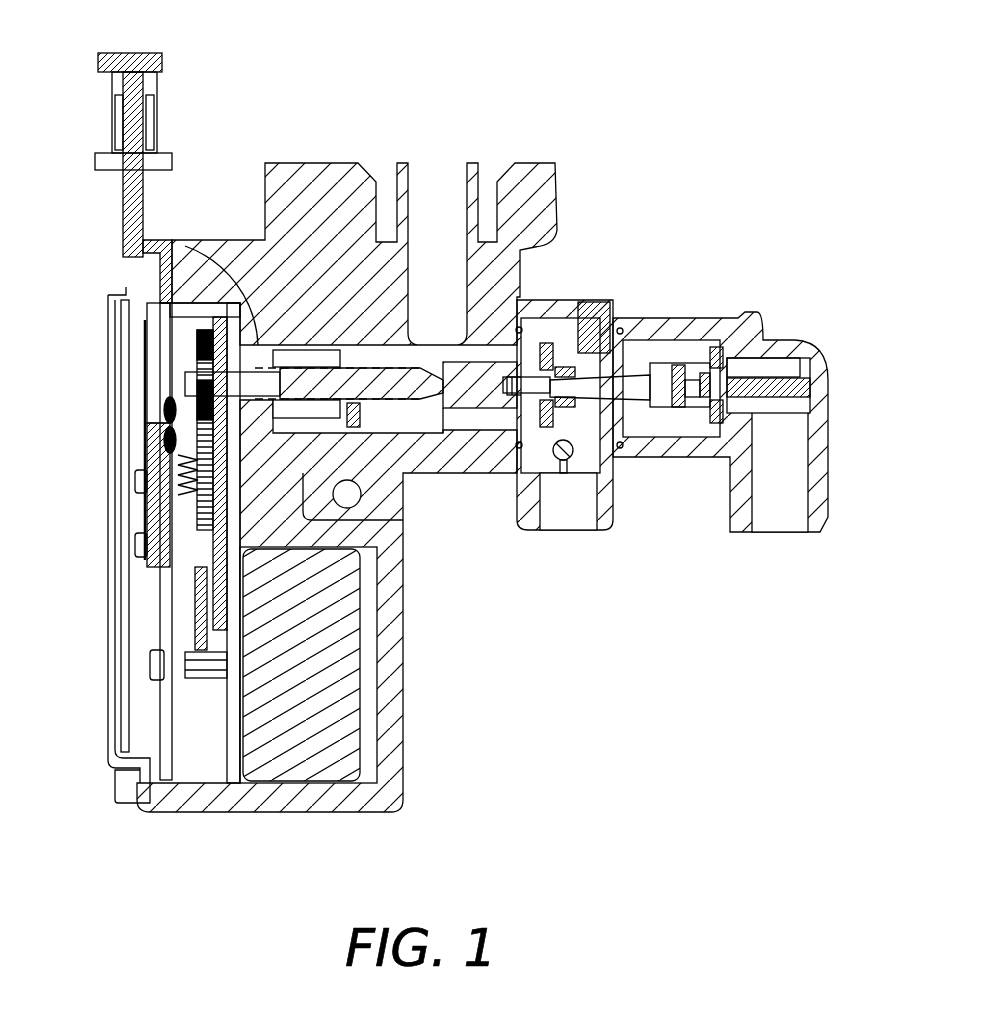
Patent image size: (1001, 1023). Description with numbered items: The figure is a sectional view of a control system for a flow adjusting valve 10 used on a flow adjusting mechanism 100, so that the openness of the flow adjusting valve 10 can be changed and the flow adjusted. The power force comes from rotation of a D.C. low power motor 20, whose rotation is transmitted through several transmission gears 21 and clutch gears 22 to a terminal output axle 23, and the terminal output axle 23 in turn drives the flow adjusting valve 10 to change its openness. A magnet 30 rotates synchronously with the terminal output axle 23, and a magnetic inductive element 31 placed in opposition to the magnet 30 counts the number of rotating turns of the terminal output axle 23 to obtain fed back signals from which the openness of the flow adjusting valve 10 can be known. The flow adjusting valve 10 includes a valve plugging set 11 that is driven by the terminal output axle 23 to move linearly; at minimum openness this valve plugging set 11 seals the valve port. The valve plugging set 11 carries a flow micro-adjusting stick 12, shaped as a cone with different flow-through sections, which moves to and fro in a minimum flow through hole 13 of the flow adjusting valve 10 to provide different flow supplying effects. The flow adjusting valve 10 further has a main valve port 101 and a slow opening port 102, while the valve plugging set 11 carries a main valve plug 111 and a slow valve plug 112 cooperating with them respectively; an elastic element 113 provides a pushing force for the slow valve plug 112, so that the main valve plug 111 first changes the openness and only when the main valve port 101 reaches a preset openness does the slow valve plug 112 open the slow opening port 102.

The flow adjusting mechanism 100 is at (435, 432).
The flow adjusting valve 10 is at (460, 453).
The valve plugging set 11 is at (540, 242).
The main valve plug 111 is at (485, 370).
The flow micro-adjusting stick 12 is at (633, 378).
The minimum flow through hole 13 is at (635, 375).
The slow valve plug 112 is at (733, 342).
The elastic element 113 is at (687, 412).
The main valve port 101 is at (583, 532).
The slow opening port 102 is at (813, 518).
The D.C. low power motor 20 is at (347, 715).
The transmission gears 21 is at (220, 566).
The clutch gears 22 is at (195, 522).
The terminal output axle 23 is at (143, 237).
The magnet 30 is at (200, 345).
The magnetic inductive element 31 is at (143, 426).